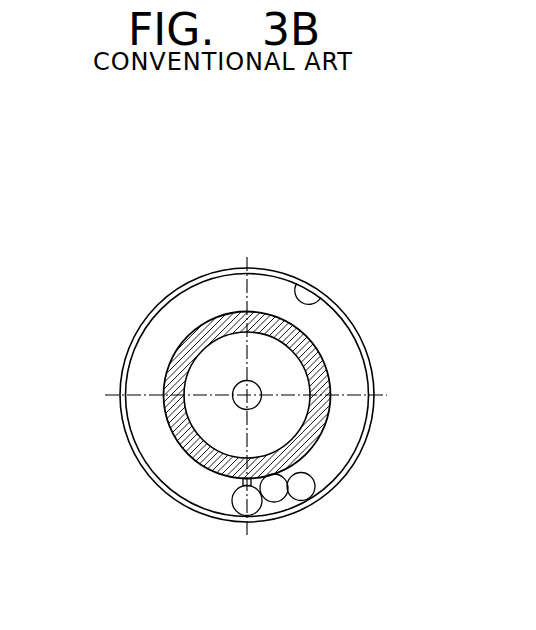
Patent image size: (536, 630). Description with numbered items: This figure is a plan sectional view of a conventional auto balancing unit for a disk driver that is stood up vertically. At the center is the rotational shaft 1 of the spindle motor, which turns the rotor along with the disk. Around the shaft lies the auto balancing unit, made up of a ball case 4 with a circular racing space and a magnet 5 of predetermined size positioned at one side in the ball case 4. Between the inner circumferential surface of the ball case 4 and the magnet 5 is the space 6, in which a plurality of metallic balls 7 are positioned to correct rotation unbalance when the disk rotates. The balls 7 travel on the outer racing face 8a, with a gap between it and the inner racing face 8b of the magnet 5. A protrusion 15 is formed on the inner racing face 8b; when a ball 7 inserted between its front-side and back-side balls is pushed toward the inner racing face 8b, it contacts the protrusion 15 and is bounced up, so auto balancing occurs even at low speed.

The rotational shaft 1 is at (261, 390).
The ball case 4 is at (350, 323).
The magnet 5 is at (317, 433).
The space 6 is at (143, 437).
The ball 7 is at (253, 507).
The outer racing face 8a is at (296, 284).
The inner racing face 8b is at (170, 360).
The protrusion 15 is at (243, 485).